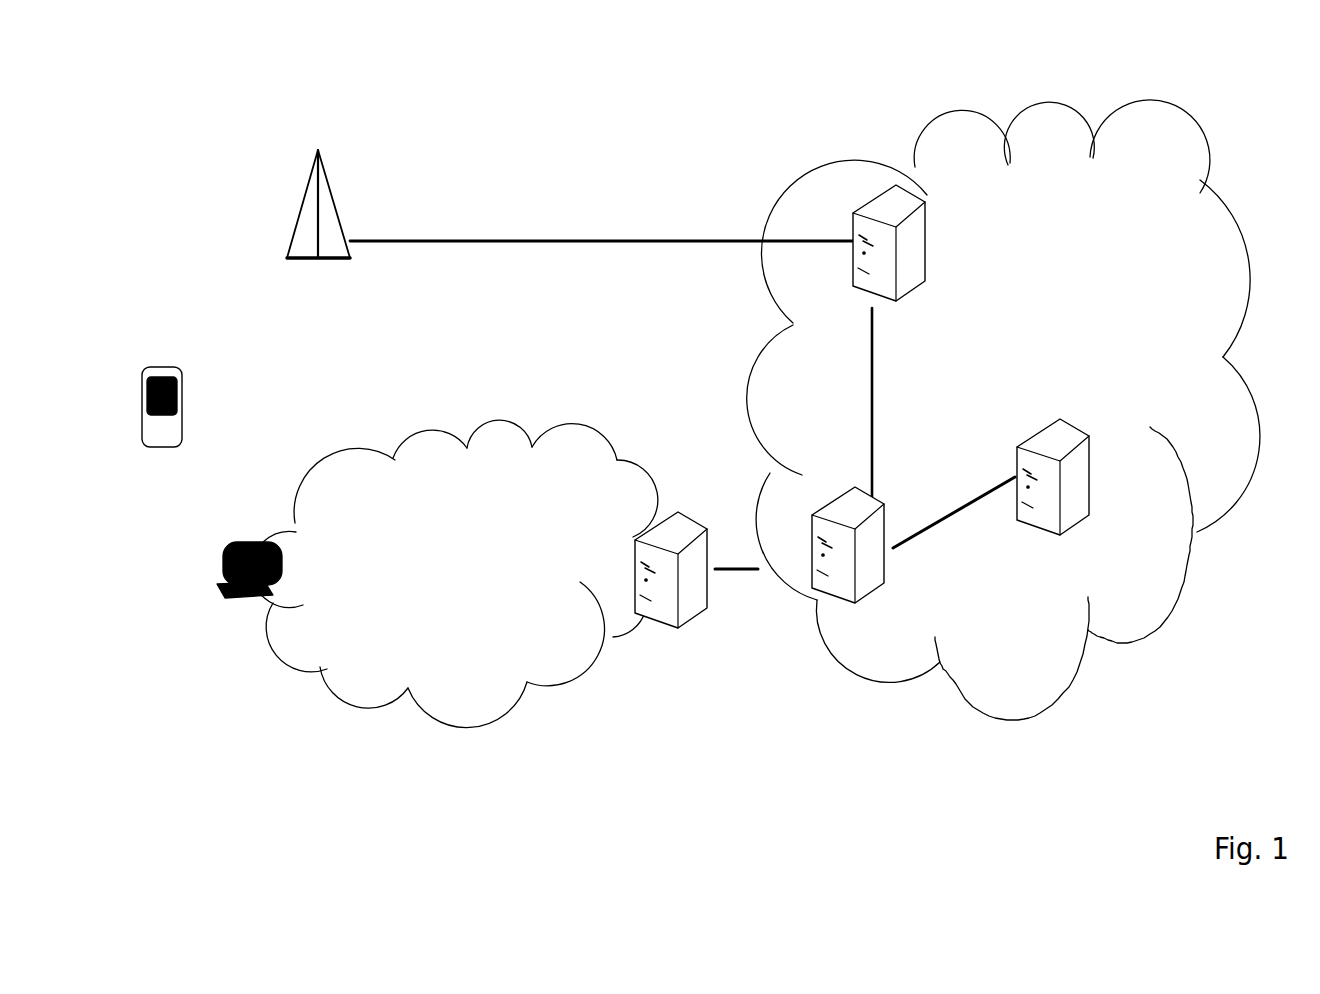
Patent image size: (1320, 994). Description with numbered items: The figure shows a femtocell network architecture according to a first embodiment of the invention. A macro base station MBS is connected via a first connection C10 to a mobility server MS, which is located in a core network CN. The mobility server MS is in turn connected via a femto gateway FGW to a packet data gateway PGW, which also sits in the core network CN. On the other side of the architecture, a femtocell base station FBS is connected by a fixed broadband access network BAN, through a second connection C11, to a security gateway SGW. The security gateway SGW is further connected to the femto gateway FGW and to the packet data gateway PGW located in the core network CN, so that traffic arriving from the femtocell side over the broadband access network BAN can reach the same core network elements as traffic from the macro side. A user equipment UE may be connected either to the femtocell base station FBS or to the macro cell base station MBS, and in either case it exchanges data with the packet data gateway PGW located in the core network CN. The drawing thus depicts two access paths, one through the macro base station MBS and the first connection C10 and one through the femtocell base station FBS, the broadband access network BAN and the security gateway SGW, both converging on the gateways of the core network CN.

The user equipment UE is at (158, 373).
The macro base station MBS is at (337, 198).
The first connection C10 is at (643, 241).
The second connection C11 is at (437, 465).
The mobility server MS is at (904, 183).
The core network CN is at (1188, 133).
The security gateway SGW is at (679, 510).
The femtocell base station FBS is at (223, 555).
The fixed broadband access network BAN is at (376, 708).
The femto gateway FGW is at (837, 602).
The packet data gateway PGW is at (1085, 512).